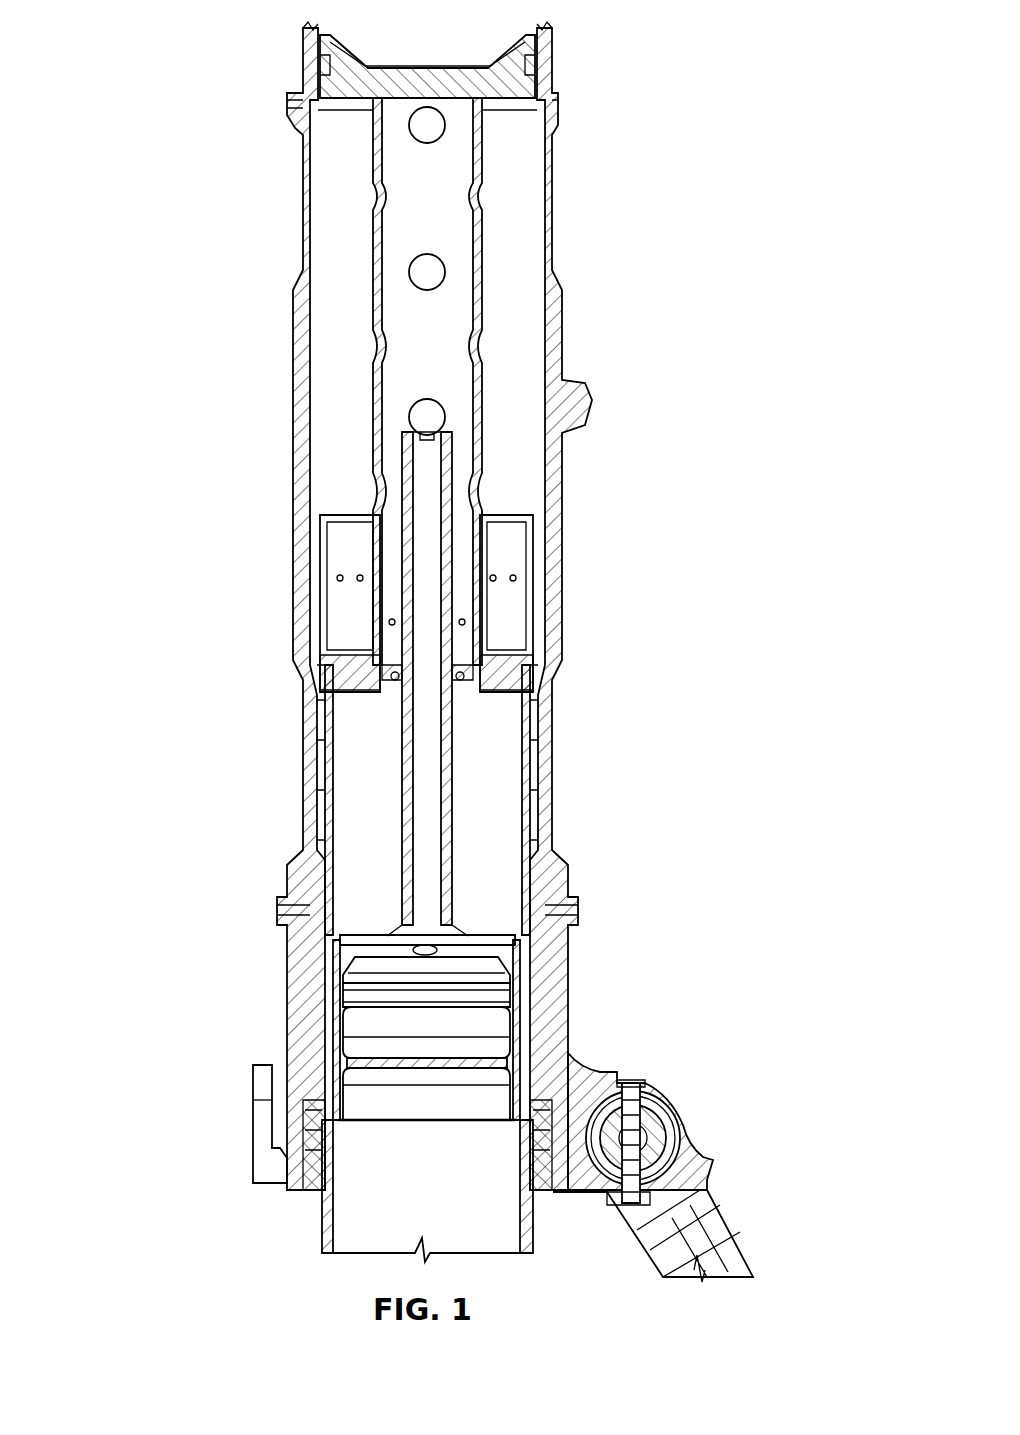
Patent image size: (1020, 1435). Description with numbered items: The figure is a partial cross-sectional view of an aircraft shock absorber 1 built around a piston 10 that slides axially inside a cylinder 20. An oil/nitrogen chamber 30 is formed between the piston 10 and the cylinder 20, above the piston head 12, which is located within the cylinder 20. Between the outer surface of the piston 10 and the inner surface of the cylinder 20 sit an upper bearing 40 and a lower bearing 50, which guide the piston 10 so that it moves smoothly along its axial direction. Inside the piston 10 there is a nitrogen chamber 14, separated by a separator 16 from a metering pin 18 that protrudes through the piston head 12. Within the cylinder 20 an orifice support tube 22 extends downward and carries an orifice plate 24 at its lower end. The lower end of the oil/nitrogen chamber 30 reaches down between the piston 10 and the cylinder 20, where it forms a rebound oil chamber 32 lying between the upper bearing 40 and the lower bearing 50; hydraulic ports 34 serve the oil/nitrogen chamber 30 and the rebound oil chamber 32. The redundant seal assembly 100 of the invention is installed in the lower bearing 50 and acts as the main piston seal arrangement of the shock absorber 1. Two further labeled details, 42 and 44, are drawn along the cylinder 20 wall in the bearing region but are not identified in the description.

The aircraft shock absorber 1 is at (688, 150).
The piston 10 is at (530, 808).
The piston head 12 is at (330, 652).
The nitrogen chamber 14 is at (352, 1213).
The separator 16 is at (305, 1086).
The metering pin 18 is at (440, 437).
The cylinder 20 is at (553, 317).
The orifice support tube 22 is at (485, 212).
The orifice plate 24 is at (388, 694).
The oil/nitrogen chamber 30 is at (330, 223).
The rebound oil chamber 32 is at (322, 805).
The hydraulic ports 34 is at (288, 129).
The upper bearing 40 is at (535, 520).
The outer tube 42 is at (548, 625).
The inner cylinder tube 44 is at (545, 745).
The lower bearing 50 is at (545, 1010).
The redundant seal assembly 100 is at (245, 1132).